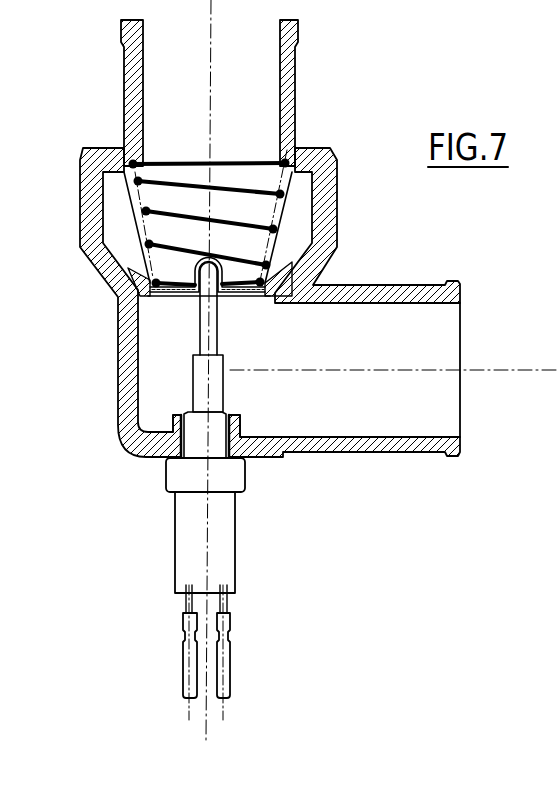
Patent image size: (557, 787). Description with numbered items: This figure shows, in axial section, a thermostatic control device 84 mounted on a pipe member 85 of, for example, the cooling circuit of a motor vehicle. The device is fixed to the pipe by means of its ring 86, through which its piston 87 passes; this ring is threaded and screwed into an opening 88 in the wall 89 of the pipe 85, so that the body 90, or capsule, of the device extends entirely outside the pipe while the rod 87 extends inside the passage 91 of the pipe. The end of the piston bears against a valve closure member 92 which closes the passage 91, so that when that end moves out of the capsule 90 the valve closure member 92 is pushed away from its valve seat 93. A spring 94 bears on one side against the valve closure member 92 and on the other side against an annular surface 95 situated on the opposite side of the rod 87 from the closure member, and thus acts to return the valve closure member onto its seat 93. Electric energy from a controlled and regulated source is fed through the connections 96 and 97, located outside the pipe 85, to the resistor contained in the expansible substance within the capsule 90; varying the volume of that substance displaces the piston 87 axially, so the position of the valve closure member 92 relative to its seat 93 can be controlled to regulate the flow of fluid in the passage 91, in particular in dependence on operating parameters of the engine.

The thermostatic control device 84 is at (237, 550).
The pipe member 85 is at (116, 397).
The ring 86 is at (198, 433).
The piston 87 is at (203, 328).
The opening 88 is at (245, 448).
The wall 89 is at (368, 443).
The body 90 is at (198, 535).
The passage 91 is at (398, 343).
The valve closure member 92 is at (160, 293).
The valve seat 93 is at (272, 272).
The spring 94 is at (153, 245).
The annular surface 95 is at (243, 158).
The connection 96 is at (188, 660).
The connection 97 is at (223, 660).